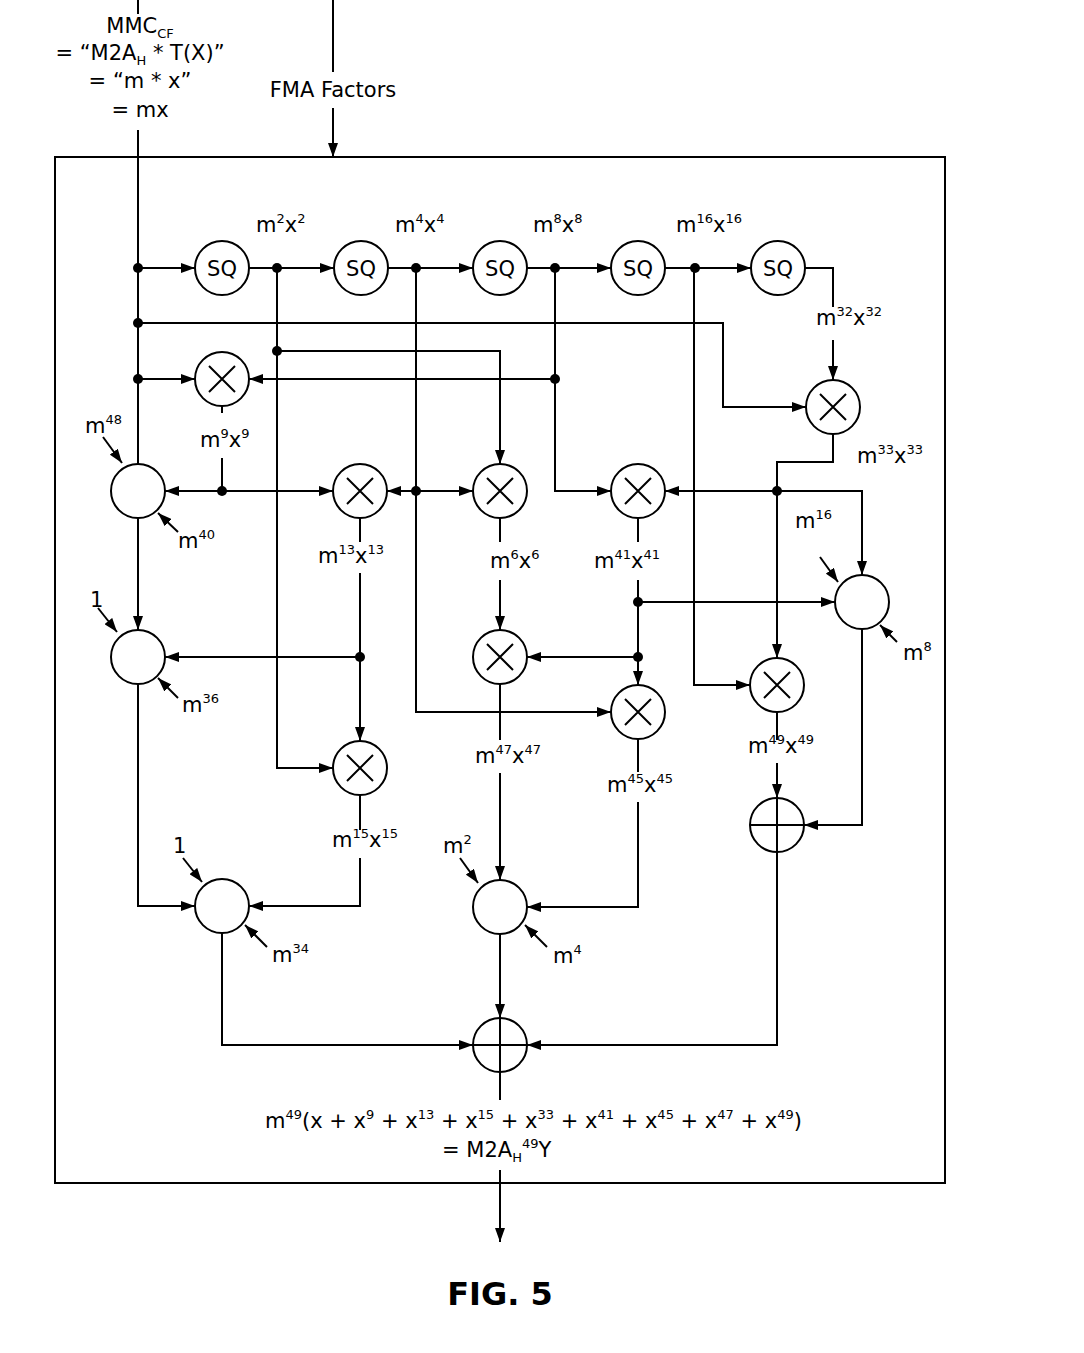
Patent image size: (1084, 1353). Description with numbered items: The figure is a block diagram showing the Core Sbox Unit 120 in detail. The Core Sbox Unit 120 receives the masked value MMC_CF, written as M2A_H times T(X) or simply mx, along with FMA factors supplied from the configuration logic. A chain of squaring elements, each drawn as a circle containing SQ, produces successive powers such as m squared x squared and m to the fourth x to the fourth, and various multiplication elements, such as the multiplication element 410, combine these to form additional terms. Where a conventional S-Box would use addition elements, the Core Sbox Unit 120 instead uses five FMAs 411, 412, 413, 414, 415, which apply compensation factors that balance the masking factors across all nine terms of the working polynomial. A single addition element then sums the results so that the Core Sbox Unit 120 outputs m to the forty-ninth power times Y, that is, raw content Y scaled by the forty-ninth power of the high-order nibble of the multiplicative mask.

The Core Sbox Unit 120 is at (600, 186).
The multiplication element 410 is at (810, 391).
The FMA 411 is at (119, 514).
The FMA 412 is at (122, 685).
The FMA 413 is at (212, 933).
The FMA 414 is at (477, 928).
The FMA 415 is at (877, 574).